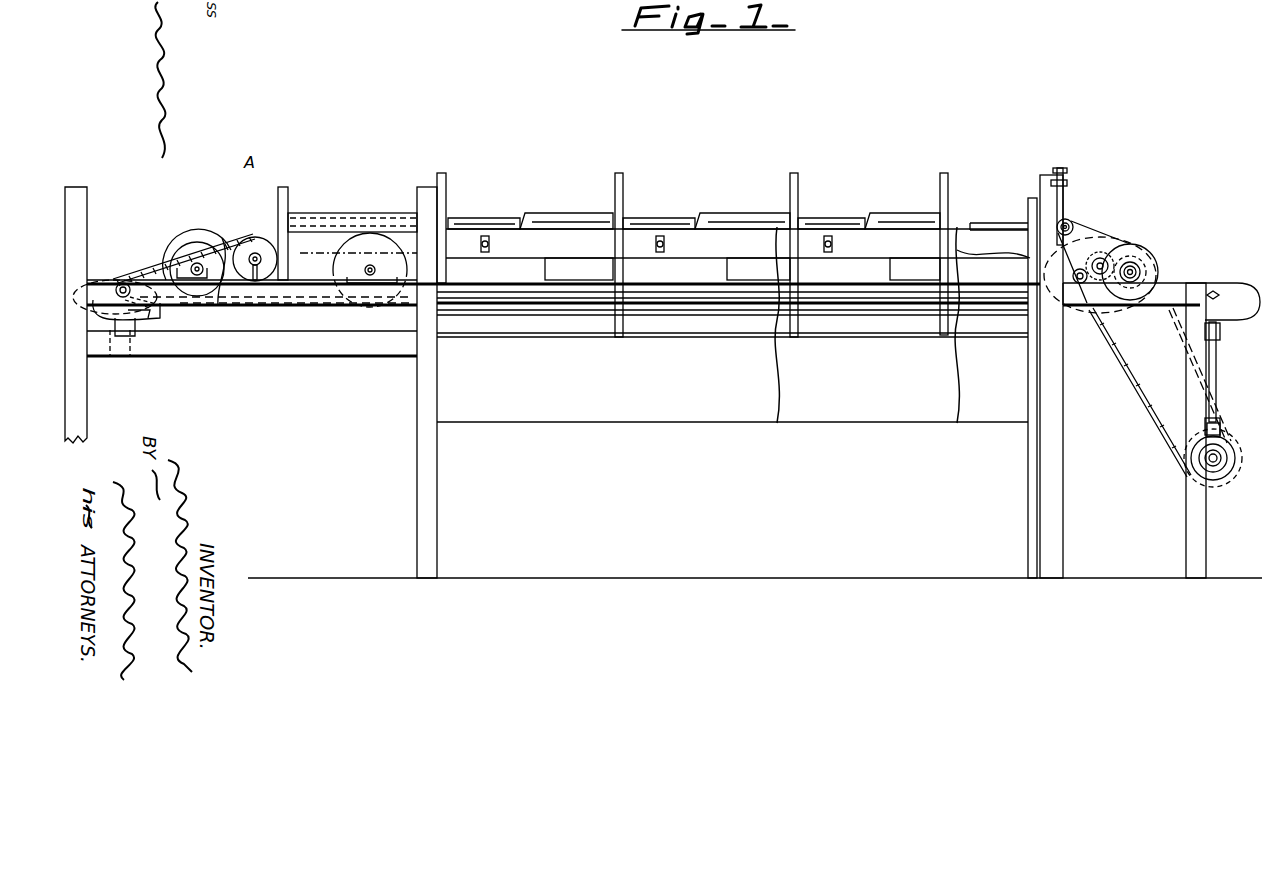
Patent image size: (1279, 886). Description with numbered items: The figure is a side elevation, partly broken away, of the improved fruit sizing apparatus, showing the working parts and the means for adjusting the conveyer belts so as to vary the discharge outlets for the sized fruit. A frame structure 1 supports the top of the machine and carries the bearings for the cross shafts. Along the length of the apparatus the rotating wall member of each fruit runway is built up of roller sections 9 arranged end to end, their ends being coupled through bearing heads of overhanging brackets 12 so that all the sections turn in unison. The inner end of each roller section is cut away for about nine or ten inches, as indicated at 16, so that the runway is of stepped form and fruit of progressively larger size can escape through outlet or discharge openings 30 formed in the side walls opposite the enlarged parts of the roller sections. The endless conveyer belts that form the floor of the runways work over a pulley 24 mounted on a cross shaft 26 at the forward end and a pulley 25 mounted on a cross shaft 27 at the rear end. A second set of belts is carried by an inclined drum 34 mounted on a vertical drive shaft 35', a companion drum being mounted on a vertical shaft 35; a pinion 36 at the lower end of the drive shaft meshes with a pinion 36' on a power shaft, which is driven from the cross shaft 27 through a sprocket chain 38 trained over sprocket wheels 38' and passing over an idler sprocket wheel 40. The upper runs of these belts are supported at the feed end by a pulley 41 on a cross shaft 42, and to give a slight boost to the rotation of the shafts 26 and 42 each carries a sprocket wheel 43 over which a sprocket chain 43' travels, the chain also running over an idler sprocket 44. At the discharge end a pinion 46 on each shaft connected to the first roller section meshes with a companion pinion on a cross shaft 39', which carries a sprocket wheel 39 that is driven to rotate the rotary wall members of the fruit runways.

The frame structure 1 is at (417, 473).
The roller sections 9 is at (356, 222).
The overhanging bracket 12 is at (624, 195).
The cut-away portion of roller section 16 is at (487, 222).
The pulley 24 is at (197, 246).
The pulley 25 is at (1147, 257).
The cross shaft 26 is at (172, 262).
The cross shaft 27 is at (1142, 275).
The outlet or discharge openings 30 is at (580, 272).
The drum 34 is at (108, 296).
The vertical shaft 35 is at (123, 351).
The vertical drive shaft 35' is at (1224, 430).
The pinion 36 is at (1228, 447).
The pinion 36' is at (1215, 475).
The sprocket chain 38 is at (1140, 392).
The sprocket wheels 38' is at (1194, 379).
The sprocket wheel 39 is at (1093, 245).
The cross shaft 39' is at (1103, 243).
The idler sprocket wheel 40 is at (1120, 242).
The pulley 41 is at (232, 236).
The cross shaft 42 is at (262, 262).
The sprocket wheel 43 is at (227, 287).
The sprocket chain 43' is at (139, 260).
The idler sprocket 44 is at (160, 315).
The pinion 46 is at (1040, 195).